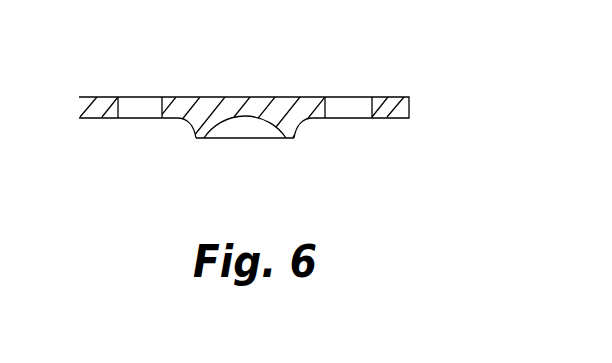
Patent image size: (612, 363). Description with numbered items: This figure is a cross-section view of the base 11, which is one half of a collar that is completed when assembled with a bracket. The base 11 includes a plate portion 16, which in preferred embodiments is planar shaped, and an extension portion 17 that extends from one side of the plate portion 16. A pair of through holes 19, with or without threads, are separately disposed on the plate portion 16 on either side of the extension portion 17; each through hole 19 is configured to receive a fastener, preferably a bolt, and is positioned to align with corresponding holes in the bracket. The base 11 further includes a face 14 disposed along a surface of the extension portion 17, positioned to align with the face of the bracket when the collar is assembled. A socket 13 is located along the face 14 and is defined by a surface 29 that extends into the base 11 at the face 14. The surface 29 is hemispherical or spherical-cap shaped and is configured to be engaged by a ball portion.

The base 11 is at (393, 75).
The socket 13 is at (247, 130).
The face 14 is at (288, 138).
The plate portion 16 is at (393, 113).
The extension portion 17 is at (191, 126).
The through holes 19 is at (140, 105).
The surface 29 is at (235, 115).